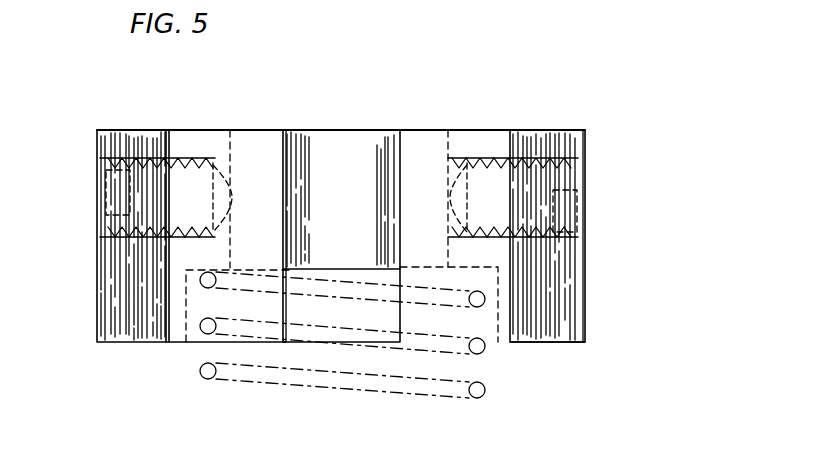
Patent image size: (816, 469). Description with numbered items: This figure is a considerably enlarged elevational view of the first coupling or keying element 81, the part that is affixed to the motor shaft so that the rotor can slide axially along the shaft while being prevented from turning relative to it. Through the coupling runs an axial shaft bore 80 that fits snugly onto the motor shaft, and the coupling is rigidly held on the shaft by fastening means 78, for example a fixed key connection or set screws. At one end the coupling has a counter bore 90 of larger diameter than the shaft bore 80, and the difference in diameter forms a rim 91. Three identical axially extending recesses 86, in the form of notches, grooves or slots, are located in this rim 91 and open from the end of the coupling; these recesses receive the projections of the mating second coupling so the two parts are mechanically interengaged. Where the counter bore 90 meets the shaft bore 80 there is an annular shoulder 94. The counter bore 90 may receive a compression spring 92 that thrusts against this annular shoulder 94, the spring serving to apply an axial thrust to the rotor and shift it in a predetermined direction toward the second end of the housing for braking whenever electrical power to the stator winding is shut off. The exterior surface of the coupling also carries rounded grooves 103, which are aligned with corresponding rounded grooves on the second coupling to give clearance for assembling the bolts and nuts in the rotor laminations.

The fastening means 78 is at (112, 186).
The axial shaft bore 80 is at (445, 135).
The first coupling or keying element 81 is at (586, 273).
The recess 86 is at (387, 315).
The counter bore 90 is at (490, 347).
The rim 91 is at (575, 342).
The compression spring 92 is at (212, 379).
The annular shoulder 94 is at (222, 283).
The rounded grooves 103 is at (142, 133).